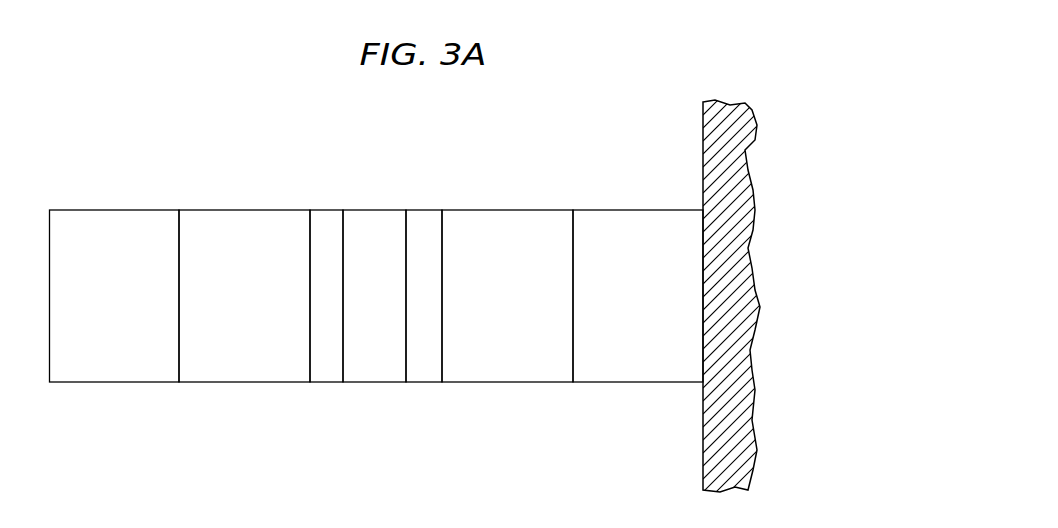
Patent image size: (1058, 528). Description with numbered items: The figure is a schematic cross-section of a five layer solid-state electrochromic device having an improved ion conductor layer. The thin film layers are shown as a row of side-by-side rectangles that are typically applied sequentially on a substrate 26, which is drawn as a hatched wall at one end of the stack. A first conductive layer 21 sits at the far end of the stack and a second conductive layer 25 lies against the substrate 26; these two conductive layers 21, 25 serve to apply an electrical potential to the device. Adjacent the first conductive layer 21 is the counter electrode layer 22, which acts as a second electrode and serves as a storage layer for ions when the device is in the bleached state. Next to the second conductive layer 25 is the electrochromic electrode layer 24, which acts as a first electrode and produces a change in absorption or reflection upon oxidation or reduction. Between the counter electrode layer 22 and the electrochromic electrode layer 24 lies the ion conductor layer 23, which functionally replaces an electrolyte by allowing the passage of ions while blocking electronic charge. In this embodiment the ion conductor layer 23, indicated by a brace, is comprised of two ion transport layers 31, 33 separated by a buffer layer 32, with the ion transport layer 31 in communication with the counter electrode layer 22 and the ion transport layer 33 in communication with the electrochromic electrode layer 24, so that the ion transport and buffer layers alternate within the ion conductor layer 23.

The conductive layer 21 is at (103, 308).
The counter electrode layer 22 is at (236, 308).
The ion conductor layer 23 is at (376, 323).
The electrochromic electrode layer 24 is at (497, 308).
The conductive layer 25 is at (628, 308).
The substrate 26 is at (753, 270).
The ion transport layer 31 is at (316, 308).
The buffer layer 32 is at (366, 308).
The ion transport layer 33 is at (414, 308).